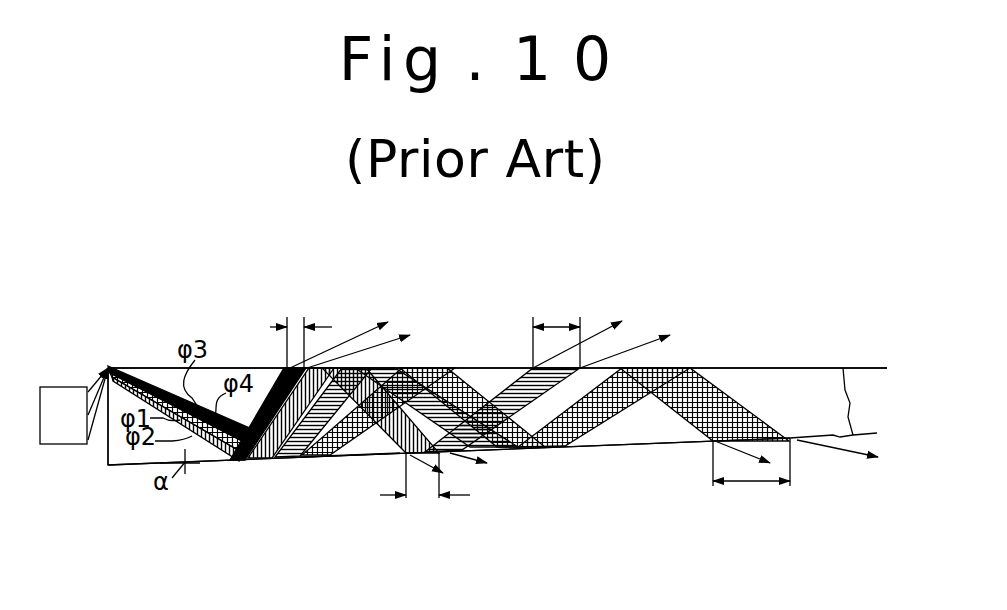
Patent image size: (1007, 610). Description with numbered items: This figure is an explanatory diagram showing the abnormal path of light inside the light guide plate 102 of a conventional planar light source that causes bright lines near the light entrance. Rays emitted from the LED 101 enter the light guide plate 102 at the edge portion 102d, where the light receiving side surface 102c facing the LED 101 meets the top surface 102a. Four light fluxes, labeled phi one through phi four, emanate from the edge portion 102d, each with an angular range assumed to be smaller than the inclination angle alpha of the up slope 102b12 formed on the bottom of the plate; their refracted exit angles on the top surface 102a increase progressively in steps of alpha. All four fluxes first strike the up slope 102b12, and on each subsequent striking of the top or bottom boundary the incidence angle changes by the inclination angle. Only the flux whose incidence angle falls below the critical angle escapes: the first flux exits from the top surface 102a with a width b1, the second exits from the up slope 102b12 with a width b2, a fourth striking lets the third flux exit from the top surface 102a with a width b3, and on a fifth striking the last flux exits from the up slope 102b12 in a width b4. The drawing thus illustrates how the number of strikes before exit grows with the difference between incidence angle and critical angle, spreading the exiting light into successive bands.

The LED 101 is at (53, 387).
The light guide plate 102 is at (640, 437).
The top surface 102a is at (445, 368).
The up slope 102b12 is at (337, 458).
The light receiving side surface 102c is at (107, 452).
The edge portion 102d is at (108, 368).
The width of light flux φ1 b1 is at (301, 328).
The width of light flux φ2 b2 is at (425, 492).
The width of light flux φ3 b3 is at (556, 328).
The width of light flux φ4 b4 is at (751, 481).